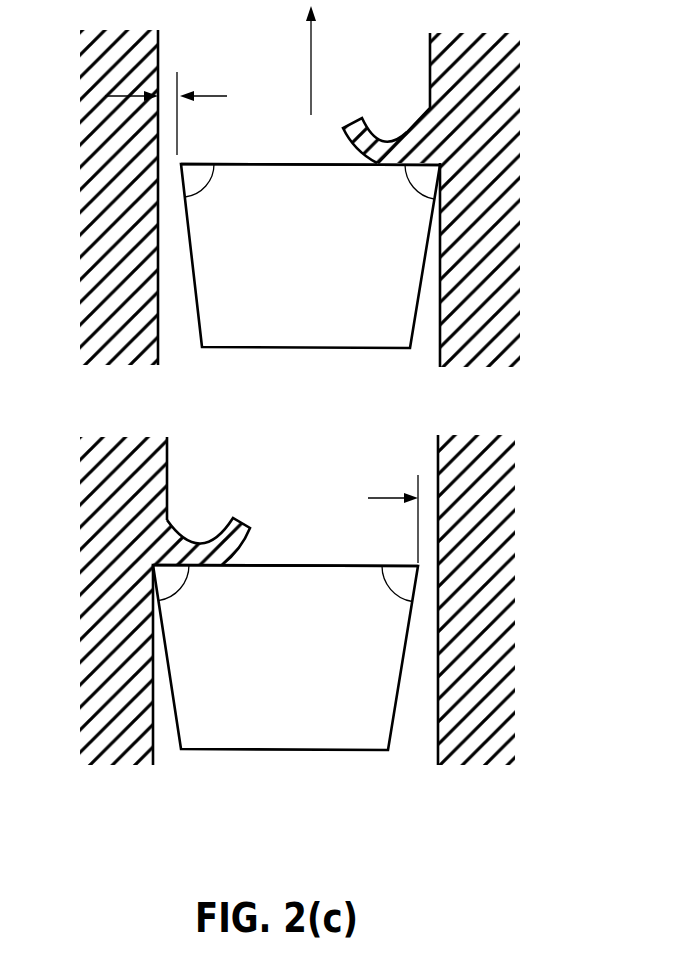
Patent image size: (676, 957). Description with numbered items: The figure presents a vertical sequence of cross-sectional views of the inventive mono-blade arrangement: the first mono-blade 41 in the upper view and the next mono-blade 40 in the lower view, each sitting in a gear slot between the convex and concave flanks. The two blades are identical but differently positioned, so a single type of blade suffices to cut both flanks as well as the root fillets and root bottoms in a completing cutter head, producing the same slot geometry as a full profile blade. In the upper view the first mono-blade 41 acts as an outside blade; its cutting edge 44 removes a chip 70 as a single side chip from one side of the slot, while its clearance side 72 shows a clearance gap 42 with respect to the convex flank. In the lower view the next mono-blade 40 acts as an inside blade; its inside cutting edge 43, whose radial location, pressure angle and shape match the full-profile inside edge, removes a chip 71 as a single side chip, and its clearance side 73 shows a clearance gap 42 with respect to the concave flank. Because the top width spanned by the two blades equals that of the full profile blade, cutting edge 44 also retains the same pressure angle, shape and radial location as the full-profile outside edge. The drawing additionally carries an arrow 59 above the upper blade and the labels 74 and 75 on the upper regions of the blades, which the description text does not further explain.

The mono-blade 40 is at (297, 737).
The first mono-blade 41 is at (293, 335).
The clearance gap 42 is at (165, 84).
The inside cutting edge 43 is at (177, 592).
The cutting edge 44 is at (413, 197).
The direction of blade movement 59 is at (332, 57).
The chip 70 is at (402, 137).
The chip 71 is at (194, 536).
The clearance side 72 is at (203, 190).
The clearance side 73 is at (388, 597).
The top surface of second mono-blade 74 is at (263, 565).
The top surface of first mono-blade 75 is at (332, 166).